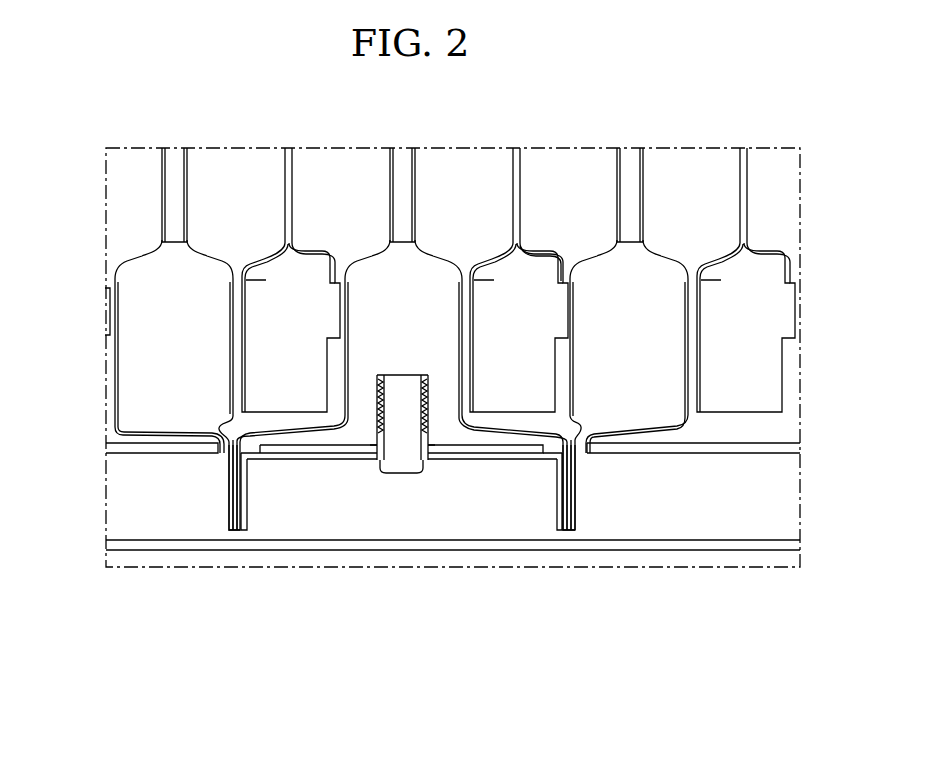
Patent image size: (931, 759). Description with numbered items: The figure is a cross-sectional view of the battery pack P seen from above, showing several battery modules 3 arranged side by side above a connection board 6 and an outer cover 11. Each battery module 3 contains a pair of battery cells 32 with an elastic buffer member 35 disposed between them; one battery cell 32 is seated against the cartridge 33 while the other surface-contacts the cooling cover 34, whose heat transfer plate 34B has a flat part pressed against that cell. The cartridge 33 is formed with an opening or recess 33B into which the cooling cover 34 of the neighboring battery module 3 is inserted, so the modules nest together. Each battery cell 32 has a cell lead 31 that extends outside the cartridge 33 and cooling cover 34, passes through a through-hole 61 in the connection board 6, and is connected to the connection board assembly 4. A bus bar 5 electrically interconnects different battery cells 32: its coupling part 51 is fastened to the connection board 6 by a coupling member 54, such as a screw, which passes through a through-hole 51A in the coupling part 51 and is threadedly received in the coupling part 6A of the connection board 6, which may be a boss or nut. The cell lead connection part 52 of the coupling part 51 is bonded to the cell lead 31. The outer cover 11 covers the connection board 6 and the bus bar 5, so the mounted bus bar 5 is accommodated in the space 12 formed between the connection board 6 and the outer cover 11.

The battery pack P is at (188, 652).
The battery module 3 is at (107, 385).
The connection board assembly 4 is at (453, 596).
The bus bar 5 is at (402, 495).
The connection board 6 is at (453, 525).
The coupling part 6A is at (429, 439).
The outer cover 11 is at (698, 548).
The space 12 is at (660, 524).
The cell lead 31 is at (314, 430).
The battery cell 32 is at (330, 156).
The cartridge 33 is at (496, 258).
The opening or recess 33B is at (524, 254).
The cooling cover 34 is at (540, 256).
The heat transfer plate 34B is at (290, 178).
The buffer member 35 is at (398, 156).
The coupling part 51 is at (490, 461).
The through-hole 51A is at (377, 461).
The cell lead connection part 52 is at (248, 516).
The coupling member 54 is at (403, 471).
The through-hole 61 is at (222, 456).